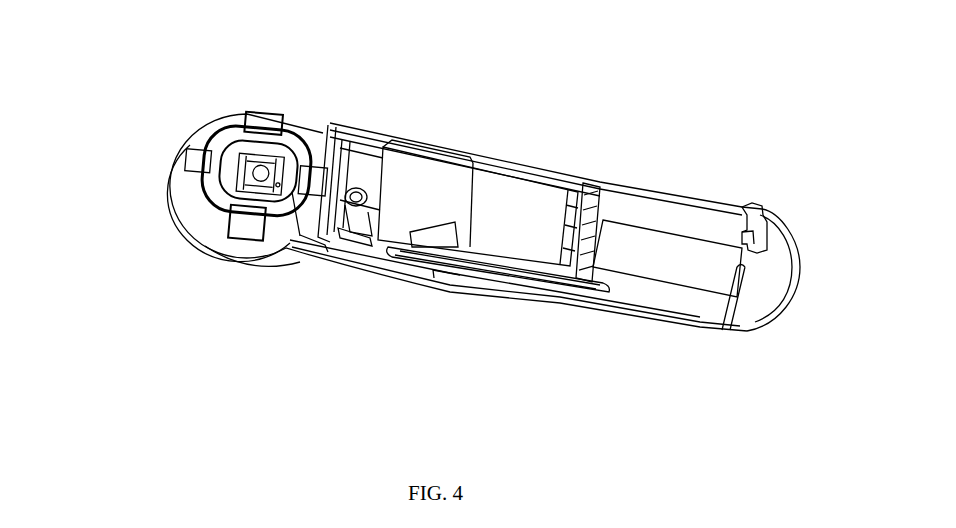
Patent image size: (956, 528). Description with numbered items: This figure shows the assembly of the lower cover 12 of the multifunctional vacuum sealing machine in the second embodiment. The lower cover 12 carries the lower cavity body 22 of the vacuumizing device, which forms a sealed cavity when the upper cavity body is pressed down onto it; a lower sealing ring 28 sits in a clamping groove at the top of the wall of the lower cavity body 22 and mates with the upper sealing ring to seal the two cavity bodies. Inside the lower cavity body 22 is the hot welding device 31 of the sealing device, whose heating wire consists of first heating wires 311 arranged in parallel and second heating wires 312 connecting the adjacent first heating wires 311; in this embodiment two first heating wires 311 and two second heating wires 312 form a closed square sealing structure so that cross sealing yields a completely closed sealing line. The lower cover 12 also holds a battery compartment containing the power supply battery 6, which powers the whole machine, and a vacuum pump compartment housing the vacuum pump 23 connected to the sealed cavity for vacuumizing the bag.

The power supply battery 6 is at (648, 256).
The lower cover 12 is at (468, 277).
The lower cavity body 22 is at (280, 172).
The vacuum pump 23 is at (422, 190).
The lower sealing ring 28 is at (287, 193).
The hot welding device 31 is at (230, 248).
The first heating wires 311 is at (240, 165).
The second heating wire 312 is at (262, 150).